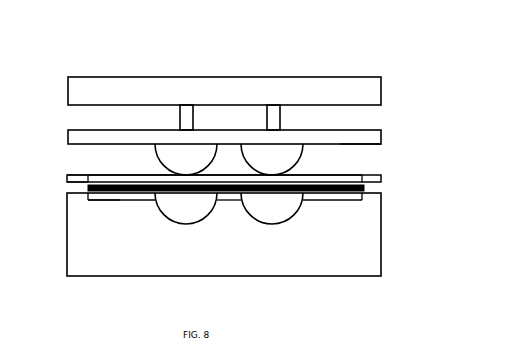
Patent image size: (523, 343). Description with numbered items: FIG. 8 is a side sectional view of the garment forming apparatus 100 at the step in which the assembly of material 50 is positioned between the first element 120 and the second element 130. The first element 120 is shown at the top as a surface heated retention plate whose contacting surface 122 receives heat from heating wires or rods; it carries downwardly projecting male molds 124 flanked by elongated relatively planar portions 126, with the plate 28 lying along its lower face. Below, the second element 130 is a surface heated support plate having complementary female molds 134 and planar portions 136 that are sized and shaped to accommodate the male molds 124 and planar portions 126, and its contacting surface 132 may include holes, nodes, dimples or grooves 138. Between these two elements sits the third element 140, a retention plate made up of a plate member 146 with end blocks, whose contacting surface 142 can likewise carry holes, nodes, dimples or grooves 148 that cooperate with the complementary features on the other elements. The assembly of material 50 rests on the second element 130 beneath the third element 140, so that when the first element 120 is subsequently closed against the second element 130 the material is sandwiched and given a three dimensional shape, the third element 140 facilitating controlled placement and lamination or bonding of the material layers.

The apparatus 100 is at (52, 55).
The first element 120 is at (370, 138).
The contacting surface 122 is at (78, 142).
The male molds 124 is at (172, 154).
The planar portions 126 is at (110, 142).
The plate 28 is at (348, 144).
The third element 140 is at (235, 177).
The holes, nodes, dimples or grooves 148 is at (73, 174).
The plate member 146 is at (107, 178).
The contacting surface 142 is at (68, 182).
The contacting surface 132 is at (366, 192).
The assembly of material 50 is at (137, 189).
The second element 130 is at (370, 239).
The planar portions 136 is at (120, 200).
The holes, nodes, dimples or grooves 138 is at (95, 199).
The female molds 134 is at (187, 212).